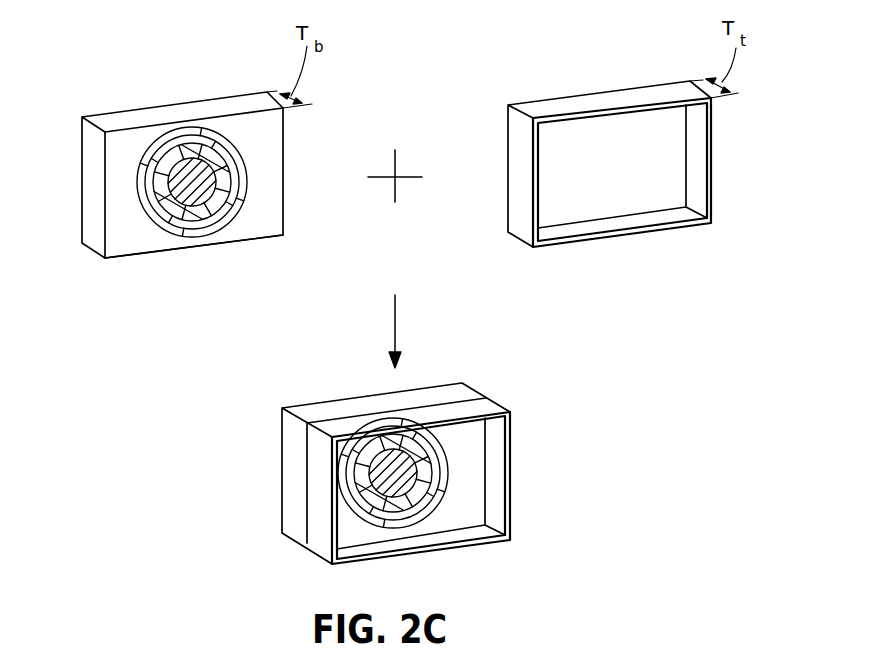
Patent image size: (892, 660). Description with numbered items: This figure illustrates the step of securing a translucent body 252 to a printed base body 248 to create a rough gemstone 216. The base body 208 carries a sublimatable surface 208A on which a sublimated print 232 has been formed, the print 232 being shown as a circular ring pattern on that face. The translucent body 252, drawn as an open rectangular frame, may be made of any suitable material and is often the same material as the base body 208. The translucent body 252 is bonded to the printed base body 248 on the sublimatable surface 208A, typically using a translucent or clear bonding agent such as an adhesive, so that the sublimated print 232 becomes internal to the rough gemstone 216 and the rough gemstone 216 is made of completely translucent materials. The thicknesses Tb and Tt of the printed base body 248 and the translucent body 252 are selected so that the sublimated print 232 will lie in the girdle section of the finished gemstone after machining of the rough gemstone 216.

The base body 208 is at (314, 228).
The sublimatable surface 208A is at (272, 205).
The sublimated print 232 is at (260, 177).
The printed base body 248 is at (155, 264).
The translucent body 252 is at (652, 236).
The rough gemstone 216 is at (256, 454).